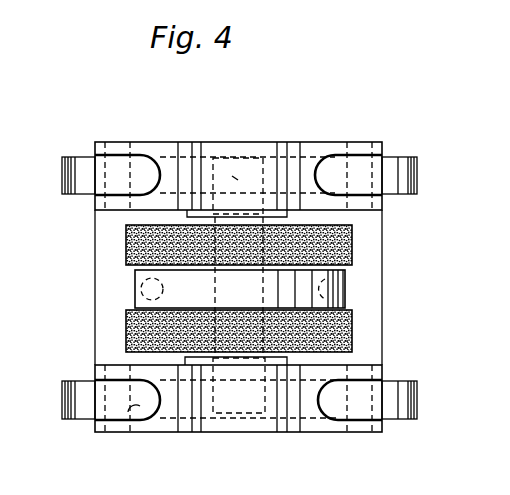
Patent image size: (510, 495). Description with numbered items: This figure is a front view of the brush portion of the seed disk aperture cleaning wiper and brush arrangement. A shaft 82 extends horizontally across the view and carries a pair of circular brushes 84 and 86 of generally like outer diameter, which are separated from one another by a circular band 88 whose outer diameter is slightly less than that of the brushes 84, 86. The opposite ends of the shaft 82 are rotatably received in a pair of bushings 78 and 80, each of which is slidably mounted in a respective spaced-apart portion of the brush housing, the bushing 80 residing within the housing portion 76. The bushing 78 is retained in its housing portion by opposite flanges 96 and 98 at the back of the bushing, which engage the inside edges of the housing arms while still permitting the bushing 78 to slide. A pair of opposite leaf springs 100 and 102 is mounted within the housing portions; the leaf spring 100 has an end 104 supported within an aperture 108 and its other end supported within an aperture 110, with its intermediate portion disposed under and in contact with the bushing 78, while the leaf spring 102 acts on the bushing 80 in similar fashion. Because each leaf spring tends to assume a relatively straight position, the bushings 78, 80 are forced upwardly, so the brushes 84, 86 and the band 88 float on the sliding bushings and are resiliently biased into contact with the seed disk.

The spaced-apart portion of the housing 76 is at (152, 148).
The bushing 78 is at (255, 425).
The bushing 80 is at (222, 151).
The shaft 82 is at (236, 178).
The circular brush 84 is at (352, 330).
The circular brush 86 is at (352, 243).
The circular band 88 is at (345, 285).
The flange 96 is at (282, 359).
The flange 98 is at (202, 360).
The leaf spring 100 is at (80, 397).
The leaf spring 102 is at (77, 174).
The end of leaf spring 104 is at (162, 416).
The aperture 108 is at (333, 412).
The aperture 110 is at (130, 410).